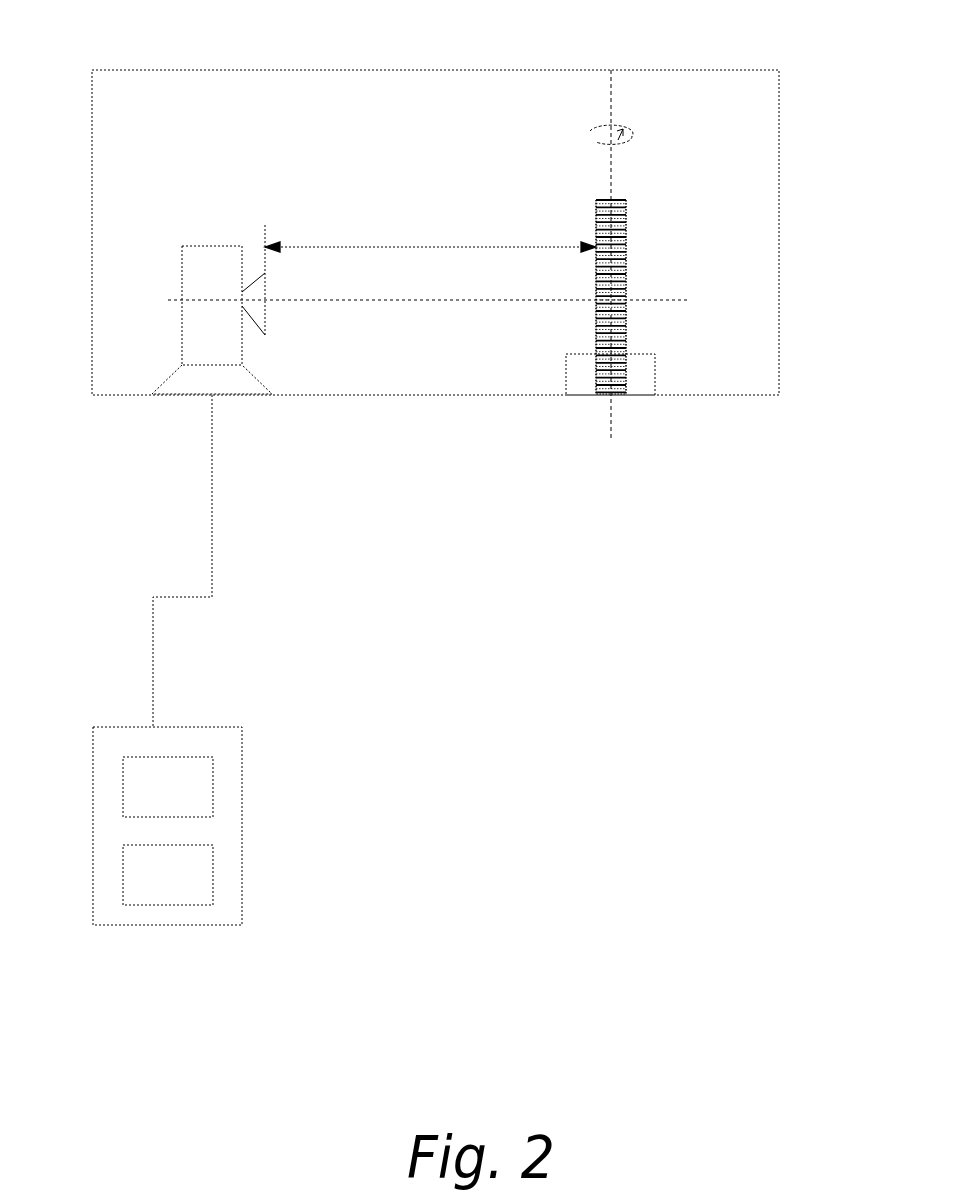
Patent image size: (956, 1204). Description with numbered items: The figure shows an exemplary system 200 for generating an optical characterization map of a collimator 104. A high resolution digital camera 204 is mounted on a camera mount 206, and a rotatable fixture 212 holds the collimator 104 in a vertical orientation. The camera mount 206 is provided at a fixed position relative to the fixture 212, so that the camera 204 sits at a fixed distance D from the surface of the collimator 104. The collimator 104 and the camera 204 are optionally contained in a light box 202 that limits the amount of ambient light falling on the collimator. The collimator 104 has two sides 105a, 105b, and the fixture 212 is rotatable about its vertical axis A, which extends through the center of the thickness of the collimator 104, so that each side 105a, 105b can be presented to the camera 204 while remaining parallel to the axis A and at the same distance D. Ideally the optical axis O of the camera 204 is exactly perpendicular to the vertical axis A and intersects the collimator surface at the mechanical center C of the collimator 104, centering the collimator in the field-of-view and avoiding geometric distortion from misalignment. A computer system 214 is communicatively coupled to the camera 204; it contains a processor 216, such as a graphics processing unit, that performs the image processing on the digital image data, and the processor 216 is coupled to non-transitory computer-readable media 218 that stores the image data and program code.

The system 200 is at (497, 996).
The light box 202 is at (573, 70).
The digital camera 204 is at (218, 263).
The camera mount 206 is at (236, 380).
The collimator 104 is at (626, 198).
The first side of the collimator 105a is at (596, 214).
The second side of the collimator 105b is at (626, 214).
The rotatable fixture 212 is at (642, 380).
The computer system 214 is at (230, 727).
The processor 216 is at (176, 805).
The non-transitory computer-readable media 218 is at (180, 885).
The vertical axis A is at (611, 98).
The mechanical center C is at (626, 282).
The distance D is at (430, 234).
The optical axis O is at (375, 300).